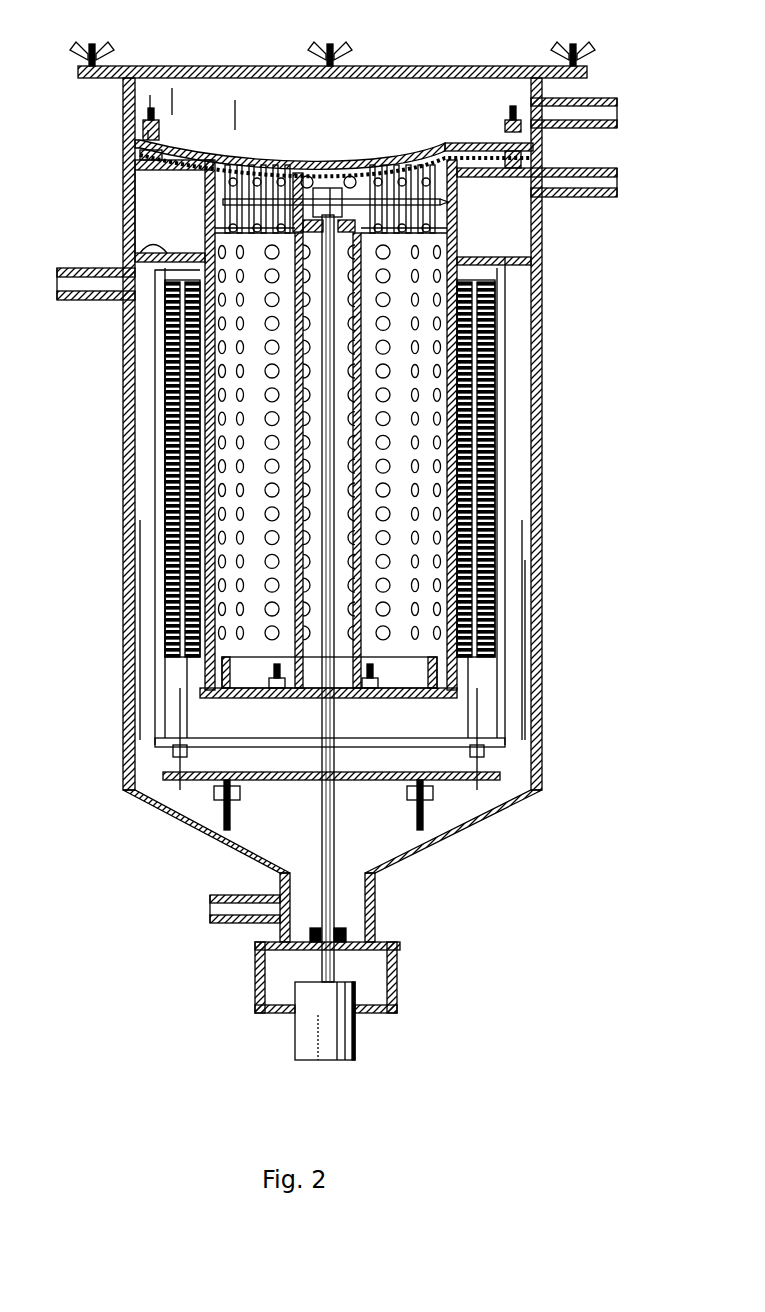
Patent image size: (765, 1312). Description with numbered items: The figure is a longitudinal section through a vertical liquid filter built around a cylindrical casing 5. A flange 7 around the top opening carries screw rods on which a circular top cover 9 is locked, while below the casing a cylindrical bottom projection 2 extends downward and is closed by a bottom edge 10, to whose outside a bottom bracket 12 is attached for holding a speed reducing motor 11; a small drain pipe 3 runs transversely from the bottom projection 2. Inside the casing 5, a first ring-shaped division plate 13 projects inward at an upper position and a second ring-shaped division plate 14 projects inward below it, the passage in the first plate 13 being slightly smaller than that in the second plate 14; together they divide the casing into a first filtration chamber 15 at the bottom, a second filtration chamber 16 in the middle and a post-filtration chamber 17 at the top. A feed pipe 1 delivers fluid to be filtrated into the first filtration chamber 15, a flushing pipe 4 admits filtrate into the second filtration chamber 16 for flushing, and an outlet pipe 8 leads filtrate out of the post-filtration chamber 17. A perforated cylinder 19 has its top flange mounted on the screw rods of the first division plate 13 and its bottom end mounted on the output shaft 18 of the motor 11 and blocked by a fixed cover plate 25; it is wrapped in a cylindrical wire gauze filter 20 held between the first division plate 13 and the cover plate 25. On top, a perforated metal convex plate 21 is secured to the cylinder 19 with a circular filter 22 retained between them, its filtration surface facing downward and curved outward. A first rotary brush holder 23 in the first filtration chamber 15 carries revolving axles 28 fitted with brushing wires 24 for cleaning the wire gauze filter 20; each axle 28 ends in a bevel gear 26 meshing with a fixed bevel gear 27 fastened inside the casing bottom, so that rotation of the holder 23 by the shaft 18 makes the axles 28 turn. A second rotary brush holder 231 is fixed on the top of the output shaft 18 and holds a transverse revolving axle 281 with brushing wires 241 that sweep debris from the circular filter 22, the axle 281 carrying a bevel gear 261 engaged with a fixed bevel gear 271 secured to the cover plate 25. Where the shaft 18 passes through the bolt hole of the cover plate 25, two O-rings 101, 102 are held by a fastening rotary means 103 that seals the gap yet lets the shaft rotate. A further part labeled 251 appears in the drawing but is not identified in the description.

The feed pipe 1 is at (86, 300).
The cylindrical bottom projection 2 is at (372, 938).
The small drain pipe 3 is at (232, 919).
The flushing pipe 4 is at (606, 197).
The cylindrical casing 5 is at (542, 557).
The flange 7 is at (592, 78).
The outlet pipe 8 is at (615, 128).
The circular top cover 9 is at (370, 66).
The bottom edge 10 is at (262, 943).
The speed reducing motor 11 is at (345, 1048).
The bottom bracket 12 is at (400, 987).
The first ring-shaped division plate 13 is at (168, 172).
The second ring-shaped division plate 14 is at (140, 257).
The first filtration chamber 15 is at (512, 480).
The second filtration chamber 16 is at (162, 212).
The post-filtration chamber 17 is at (213, 95).
The output shaft 18 is at (335, 902).
The perforated cylinder 19 is at (520, 164).
The cylindrical wire gauze filter 20 is at (497, 267).
The perforated metal convex plate 21 is at (470, 143).
The circular filter 22 is at (140, 156).
The first rotary brush holder 23 is at (498, 626).
The brushing wires 24 is at (483, 668).
The fixed cover plate 25 is at (220, 700).
The bevel gear 26 is at (182, 786).
The fixed bevel gear 27 is at (430, 780).
The revolving axles 28 is at (480, 720).
The O-ring 101 is at (350, 690).
The O-ring 102 is at (345, 704).
The fastening rotary means 103 is at (298, 698).
The second rotary brush holder 231 is at (440, 158).
The brushing wires 241 is at (167, 238).
The heating element 251 is at (395, 409).
The bevel gear 261 is at (300, 170).
The fixed bevel gear 271 is at (460, 238).
The revolving axle 281 is at (455, 204).